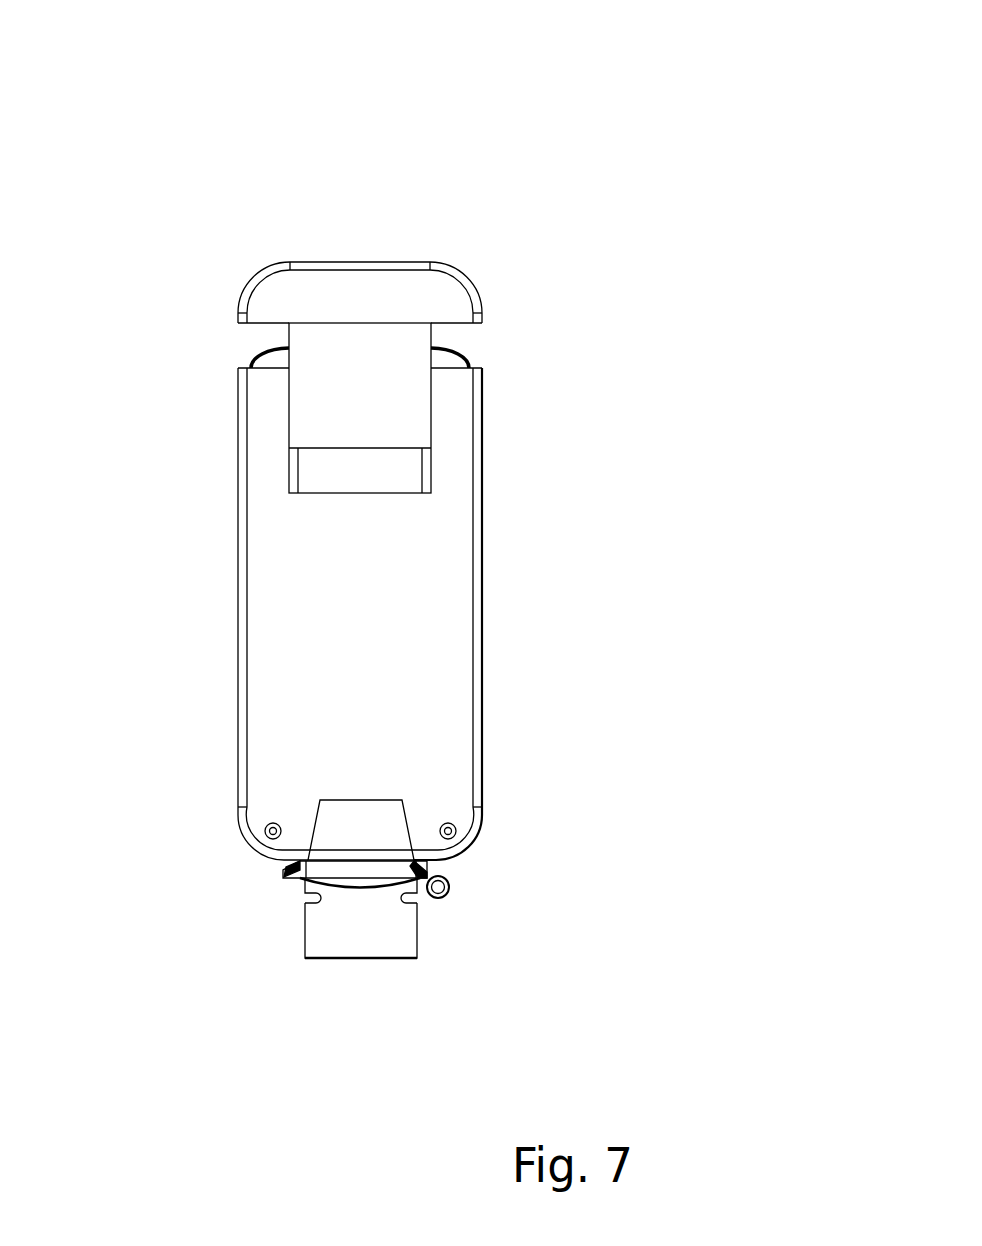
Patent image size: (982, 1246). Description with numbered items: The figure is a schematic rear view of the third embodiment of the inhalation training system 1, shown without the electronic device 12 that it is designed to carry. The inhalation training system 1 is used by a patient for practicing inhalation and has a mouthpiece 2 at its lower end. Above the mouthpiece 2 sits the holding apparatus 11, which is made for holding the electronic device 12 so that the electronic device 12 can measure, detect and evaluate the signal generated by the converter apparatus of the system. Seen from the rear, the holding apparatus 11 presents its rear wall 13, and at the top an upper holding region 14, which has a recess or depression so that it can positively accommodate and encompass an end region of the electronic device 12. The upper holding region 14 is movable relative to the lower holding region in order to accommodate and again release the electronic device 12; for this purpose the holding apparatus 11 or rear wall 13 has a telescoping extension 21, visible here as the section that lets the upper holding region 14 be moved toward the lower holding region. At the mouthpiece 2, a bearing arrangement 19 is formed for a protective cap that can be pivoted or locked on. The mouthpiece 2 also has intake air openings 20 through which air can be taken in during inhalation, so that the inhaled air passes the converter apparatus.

The inhalation training system 1 is at (420, 160).
The mouthpiece 2 is at (376, 933).
The holding apparatus 11 is at (500, 618).
The electronic device 12 is at (450, 354).
The rear wall 13 is at (305, 715).
The upper holding region 14 is at (266, 324).
The bearing arrangement 19 is at (450, 887).
The intake air openings 20 is at (310, 898).
The telescoping extension 21 is at (390, 409).